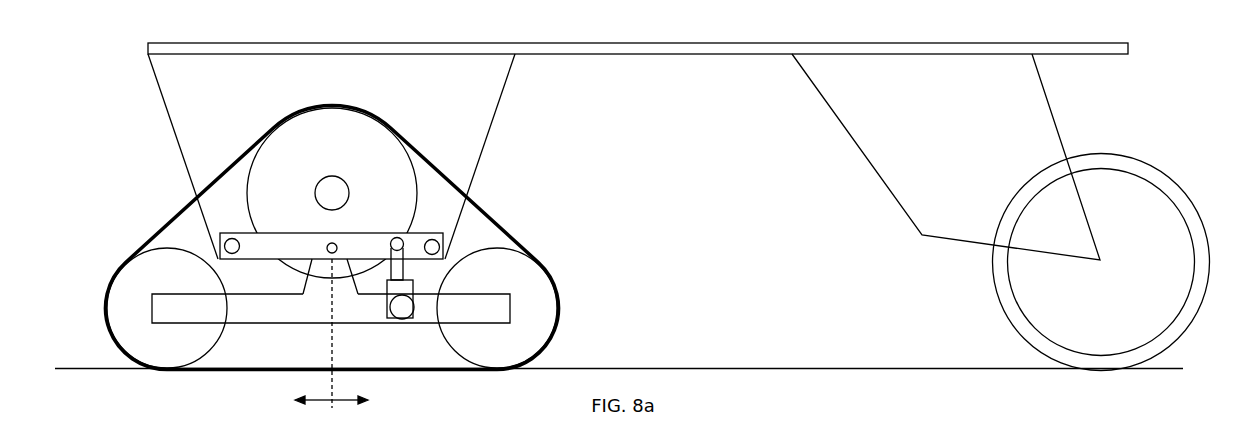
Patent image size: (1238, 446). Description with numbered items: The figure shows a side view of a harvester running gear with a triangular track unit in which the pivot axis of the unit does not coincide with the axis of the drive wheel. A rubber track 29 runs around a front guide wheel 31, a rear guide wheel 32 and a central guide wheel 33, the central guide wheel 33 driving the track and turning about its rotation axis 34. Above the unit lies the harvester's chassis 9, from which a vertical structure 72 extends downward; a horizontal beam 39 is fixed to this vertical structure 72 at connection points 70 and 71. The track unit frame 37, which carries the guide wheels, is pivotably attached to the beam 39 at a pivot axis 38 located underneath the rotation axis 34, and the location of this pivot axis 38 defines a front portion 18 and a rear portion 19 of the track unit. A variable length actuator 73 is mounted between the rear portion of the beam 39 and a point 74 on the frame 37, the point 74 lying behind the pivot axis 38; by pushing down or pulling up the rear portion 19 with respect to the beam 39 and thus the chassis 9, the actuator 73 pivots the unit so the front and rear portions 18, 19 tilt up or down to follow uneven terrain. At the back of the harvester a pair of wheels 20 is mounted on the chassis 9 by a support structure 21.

The chassis 9 is at (635, 47).
The vertical structure 72 is at (488, 80).
The rubber track 29 is at (177, 218).
The central guide wheel 33 is at (377, 138).
The rotation axis 34 is at (332, 193).
The horizontal beam 39 is at (351, 243).
The connection point 70 is at (230, 239).
The connection point 71 is at (435, 240).
The pivot axis 38 is at (327, 244).
The front guide wheel 31 is at (123, 307).
The rear guide wheel 32 is at (537, 292).
The track unit frame 37 is at (268, 313).
The variable length actuator 73 is at (390, 295).
The point 74 is at (403, 307).
The front portion 18 is at (313, 389).
The rear portion 19 is at (350, 389).
The support structure 21 is at (1037, 103).
The wheels 20 is at (1133, 203).